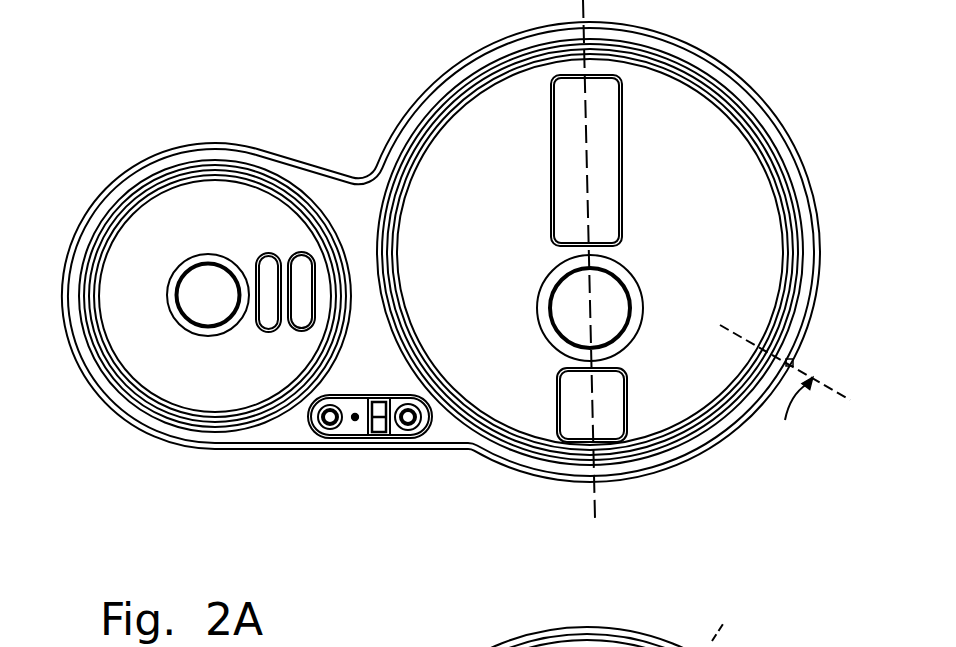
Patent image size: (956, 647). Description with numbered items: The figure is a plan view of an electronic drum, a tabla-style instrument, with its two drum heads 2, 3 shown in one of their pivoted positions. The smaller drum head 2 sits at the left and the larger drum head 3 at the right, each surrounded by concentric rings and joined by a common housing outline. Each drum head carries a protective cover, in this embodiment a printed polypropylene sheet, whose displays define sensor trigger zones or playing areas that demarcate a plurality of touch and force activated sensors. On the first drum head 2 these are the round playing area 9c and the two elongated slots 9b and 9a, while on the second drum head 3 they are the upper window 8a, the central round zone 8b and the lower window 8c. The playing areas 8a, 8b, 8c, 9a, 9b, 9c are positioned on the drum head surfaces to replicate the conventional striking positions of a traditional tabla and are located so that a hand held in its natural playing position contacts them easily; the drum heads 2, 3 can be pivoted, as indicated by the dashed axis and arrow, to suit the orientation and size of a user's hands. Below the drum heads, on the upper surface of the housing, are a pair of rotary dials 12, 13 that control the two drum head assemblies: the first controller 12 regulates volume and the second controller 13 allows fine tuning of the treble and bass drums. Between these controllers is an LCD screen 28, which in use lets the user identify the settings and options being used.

The drum head 2 is at (170, 215).
The drum head 3 is at (722, 142).
The playing area 8a is at (602, 168).
The playing area 8b is at (612, 297).
The playing area 8c is at (612, 397).
The playing area 9a is at (303, 317).
The playing area 9b is at (268, 263).
The playing area 9c is at (198, 303).
The rotary dial 12 is at (330, 424).
The rotary dial 13 is at (420, 433).
The LCD screen 28 is at (381, 438).